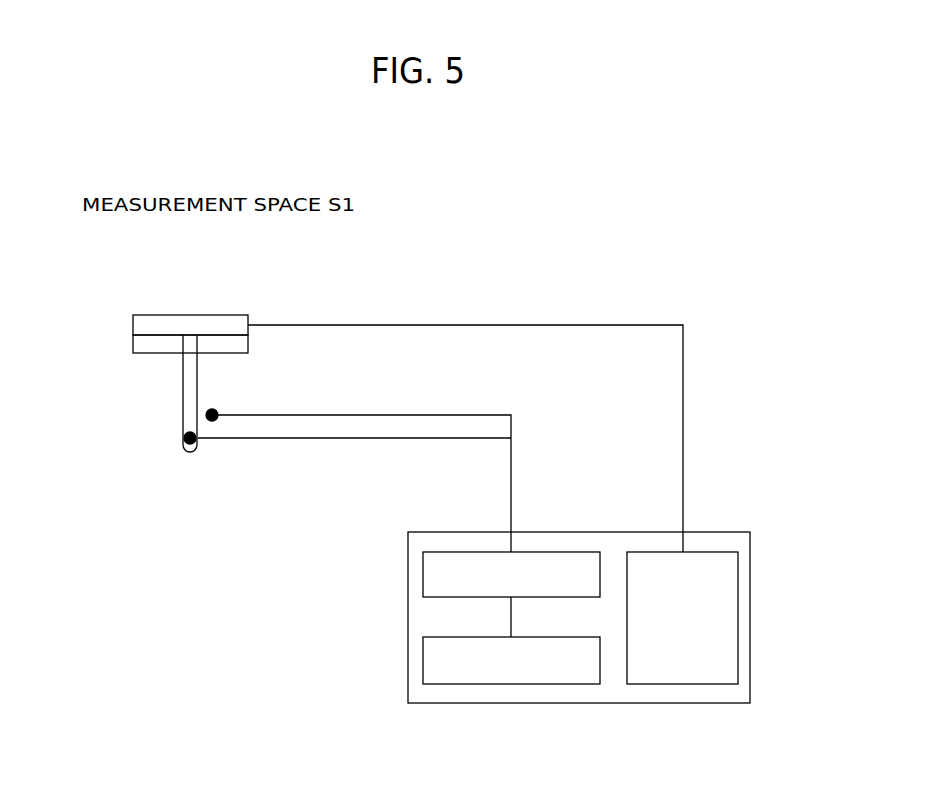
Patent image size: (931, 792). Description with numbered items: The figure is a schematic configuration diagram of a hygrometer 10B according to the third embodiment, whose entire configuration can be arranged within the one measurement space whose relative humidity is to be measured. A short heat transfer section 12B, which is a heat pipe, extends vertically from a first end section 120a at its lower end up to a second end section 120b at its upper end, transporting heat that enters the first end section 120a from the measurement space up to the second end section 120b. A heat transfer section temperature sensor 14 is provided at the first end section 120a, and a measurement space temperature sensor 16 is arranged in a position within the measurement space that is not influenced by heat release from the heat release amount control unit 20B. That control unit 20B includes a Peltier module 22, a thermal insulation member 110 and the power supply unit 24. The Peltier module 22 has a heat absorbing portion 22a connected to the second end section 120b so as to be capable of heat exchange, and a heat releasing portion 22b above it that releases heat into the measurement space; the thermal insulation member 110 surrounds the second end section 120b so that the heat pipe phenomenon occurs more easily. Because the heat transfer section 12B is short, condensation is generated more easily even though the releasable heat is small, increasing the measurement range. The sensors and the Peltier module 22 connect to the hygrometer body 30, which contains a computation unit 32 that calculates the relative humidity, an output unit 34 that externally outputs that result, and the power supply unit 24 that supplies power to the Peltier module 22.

The hygrometer 10B is at (627, 287).
The heat release amount control unit 20B is at (291, 309).
The Peltier module 22 is at (147, 315).
The heat absorbing portion 22a is at (163, 336).
The heat releasing portion 22b is at (175, 315).
The thermal insulation member 110 is at (133, 346).
The second end section 120b is at (200, 342).
The heat transfer section 12B is at (200, 375).
The heat transfer section temperature sensor 14 is at (186, 441).
The first end section 120a is at (197, 449).
The measurement space temperature sensor 16 is at (216, 411).
The hygrometer body 30 is at (754, 545).
The computation unit 32 is at (423, 572).
The output unit 34 is at (423, 660).
The power supply unit 24 is at (740, 615).